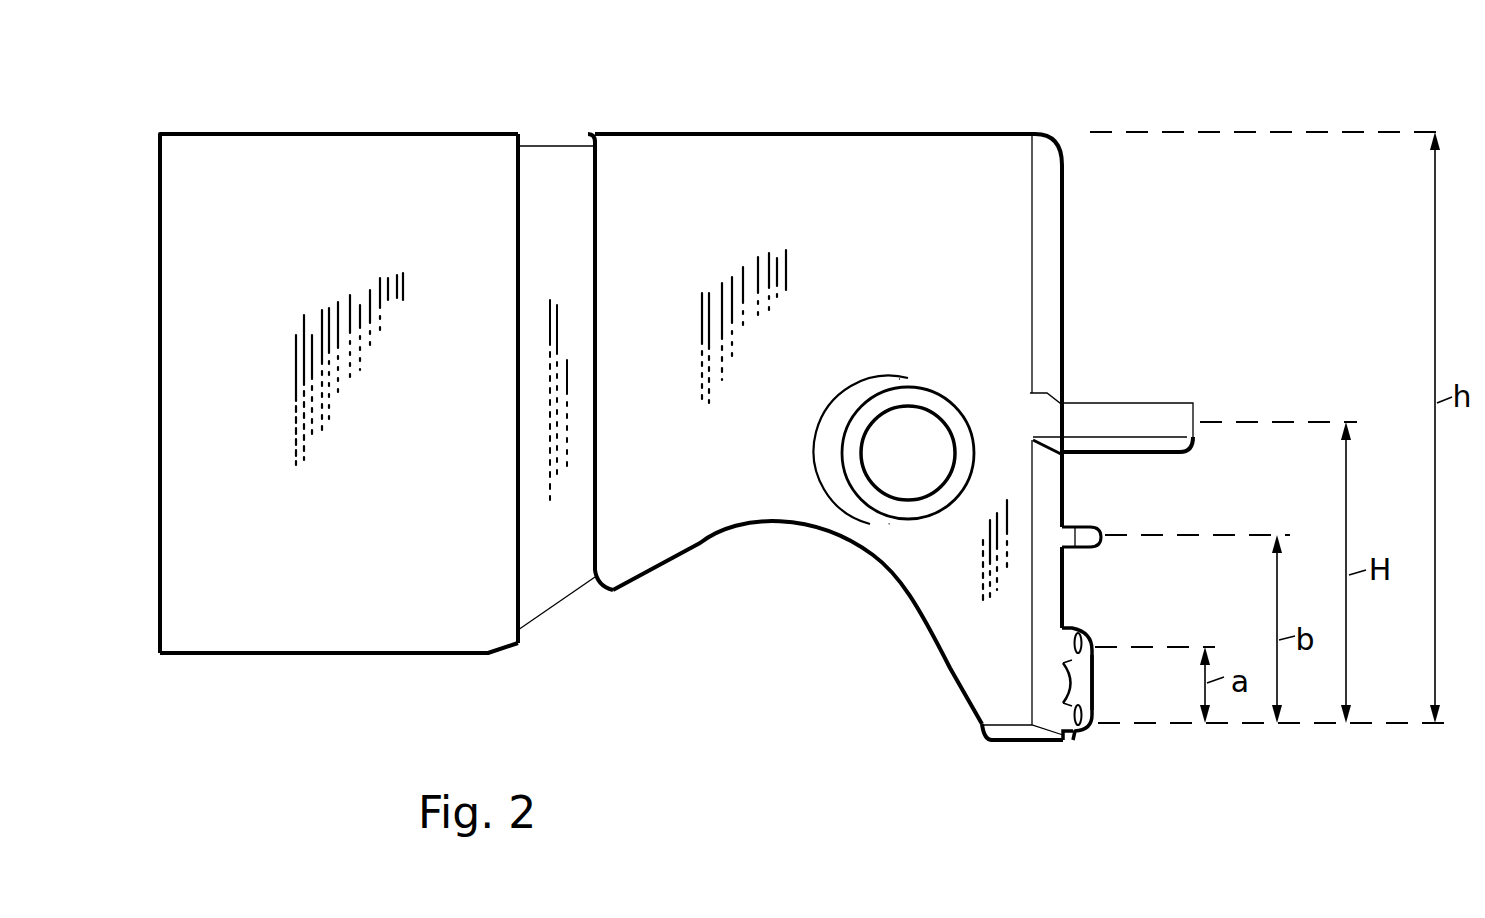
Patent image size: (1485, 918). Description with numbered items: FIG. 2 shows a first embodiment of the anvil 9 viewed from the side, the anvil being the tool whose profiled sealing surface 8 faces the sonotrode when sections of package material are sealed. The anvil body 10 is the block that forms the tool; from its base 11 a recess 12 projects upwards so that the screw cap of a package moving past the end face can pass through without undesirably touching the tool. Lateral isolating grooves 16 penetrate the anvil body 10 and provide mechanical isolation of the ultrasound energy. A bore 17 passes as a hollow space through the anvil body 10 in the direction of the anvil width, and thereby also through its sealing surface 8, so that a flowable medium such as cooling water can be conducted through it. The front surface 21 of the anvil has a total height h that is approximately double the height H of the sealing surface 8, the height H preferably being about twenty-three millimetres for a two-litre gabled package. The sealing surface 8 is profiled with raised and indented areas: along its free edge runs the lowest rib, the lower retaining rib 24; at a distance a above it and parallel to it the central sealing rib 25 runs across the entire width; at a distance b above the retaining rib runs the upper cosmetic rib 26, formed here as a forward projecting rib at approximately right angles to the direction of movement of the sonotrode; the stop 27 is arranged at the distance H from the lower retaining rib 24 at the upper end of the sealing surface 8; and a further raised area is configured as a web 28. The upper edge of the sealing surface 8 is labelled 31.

The sealing surface 8 is at (1068, 588).
The anvil 9 is at (362, 197).
The anvil body 10 is at (865, 182).
The base 11 is at (378, 657).
The recess 12 is at (697, 553).
The lateral isolating grooves 16 is at (555, 183).
The bore 17 is at (924, 425).
The front surface 21 is at (1065, 177).
The lower retaining rib 24 is at (1065, 717).
The central sealing rib 25 is at (1070, 644).
The upper cosmetic rib 26 is at (1098, 536).
The stop 27 is at (1135, 415).
The web 28 is at (1087, 703).
The upper edge of the sealing surface 31 is at (1066, 455).